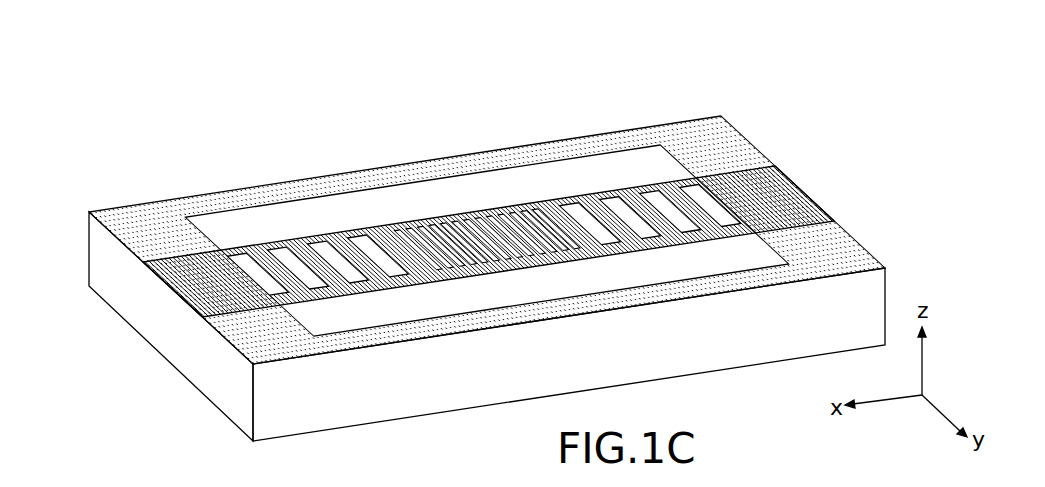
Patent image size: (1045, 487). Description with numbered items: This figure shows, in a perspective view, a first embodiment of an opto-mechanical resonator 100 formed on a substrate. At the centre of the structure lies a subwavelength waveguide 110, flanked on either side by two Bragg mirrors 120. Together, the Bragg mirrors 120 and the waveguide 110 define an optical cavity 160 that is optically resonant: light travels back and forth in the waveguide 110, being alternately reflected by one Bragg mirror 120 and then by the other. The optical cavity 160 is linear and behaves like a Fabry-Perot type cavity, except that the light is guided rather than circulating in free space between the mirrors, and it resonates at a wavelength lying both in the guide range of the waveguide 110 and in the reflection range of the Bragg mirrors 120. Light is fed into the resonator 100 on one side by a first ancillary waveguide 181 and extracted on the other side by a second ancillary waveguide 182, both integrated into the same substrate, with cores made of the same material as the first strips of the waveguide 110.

The opto-mechanical resonator 100 is at (476, 253).
The subwavelength waveguide 110 is at (531, 196).
The Bragg mirror 120 is at (358, 230).
The optical cavity 160 is at (461, 180).
The first ancillary waveguide 181 is at (788, 180).
The second ancillary waveguide 182 is at (172, 258).